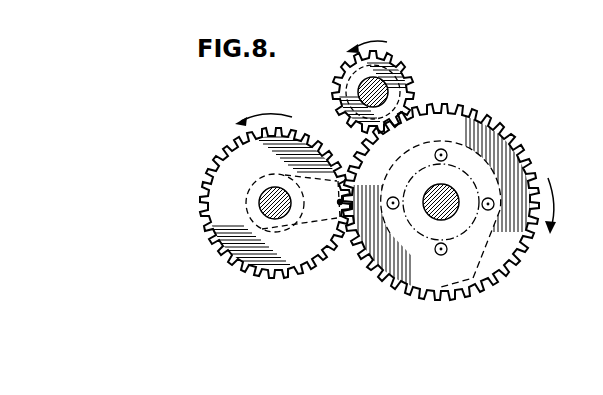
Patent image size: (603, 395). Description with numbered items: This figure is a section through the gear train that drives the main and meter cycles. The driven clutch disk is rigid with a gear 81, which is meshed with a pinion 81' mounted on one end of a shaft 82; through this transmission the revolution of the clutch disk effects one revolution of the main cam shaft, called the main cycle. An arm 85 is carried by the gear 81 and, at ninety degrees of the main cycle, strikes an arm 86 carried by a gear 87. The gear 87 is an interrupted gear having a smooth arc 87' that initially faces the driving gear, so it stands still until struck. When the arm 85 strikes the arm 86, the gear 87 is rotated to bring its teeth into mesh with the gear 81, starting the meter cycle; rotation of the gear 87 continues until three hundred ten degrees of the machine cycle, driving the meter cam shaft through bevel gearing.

The gear 81 is at (449, 200).
The pinion 81' is at (396, 87).
The shaft 82 is at (386, 91).
The arm 85 is at (500, 282).
The arm 86 is at (313, 219).
The interrupted gear 87 is at (261, 196).
The smooth arc 87' is at (324, 202).